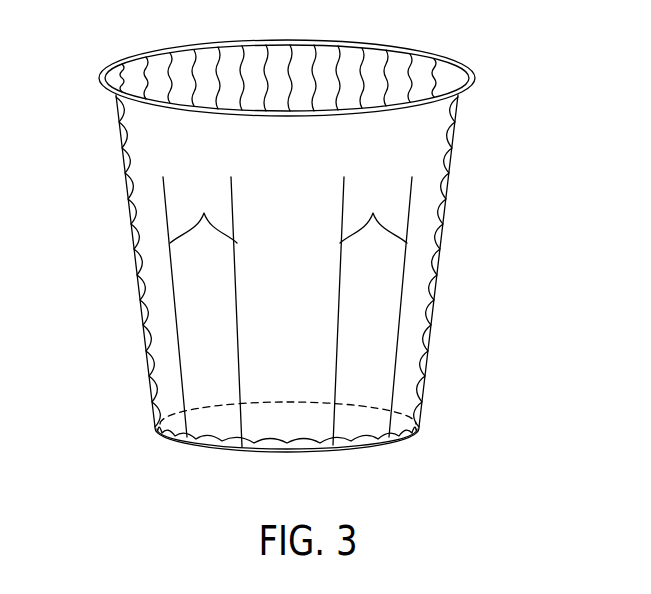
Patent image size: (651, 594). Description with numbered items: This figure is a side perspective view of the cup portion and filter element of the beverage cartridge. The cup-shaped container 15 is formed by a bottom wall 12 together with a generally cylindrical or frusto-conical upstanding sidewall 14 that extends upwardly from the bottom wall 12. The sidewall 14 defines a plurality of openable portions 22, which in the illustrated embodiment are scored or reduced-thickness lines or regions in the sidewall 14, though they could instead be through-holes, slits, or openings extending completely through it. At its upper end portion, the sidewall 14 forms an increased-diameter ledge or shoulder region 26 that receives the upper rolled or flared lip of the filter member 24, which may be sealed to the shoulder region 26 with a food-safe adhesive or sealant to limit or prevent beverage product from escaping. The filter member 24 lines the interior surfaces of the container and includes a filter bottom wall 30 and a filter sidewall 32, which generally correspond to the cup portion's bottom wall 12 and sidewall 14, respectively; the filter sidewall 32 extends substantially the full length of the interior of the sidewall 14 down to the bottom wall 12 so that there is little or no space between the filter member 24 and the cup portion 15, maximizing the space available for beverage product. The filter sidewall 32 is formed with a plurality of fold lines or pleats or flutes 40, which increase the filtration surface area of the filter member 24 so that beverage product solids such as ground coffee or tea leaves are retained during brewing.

The bottom wall 12 is at (265, 458).
The sidewall 14 is at (140, 281).
The cup-shaped container 15 is at (474, 218).
The openable portions 22 is at (287, 312).
The filter member 24 is at (350, 67).
The shoulder region 26 is at (476, 75).
The filter bottom wall 30 is at (342, 444).
The filter sidewall 32 is at (303, 52).
The flutes 40 is at (238, 58).